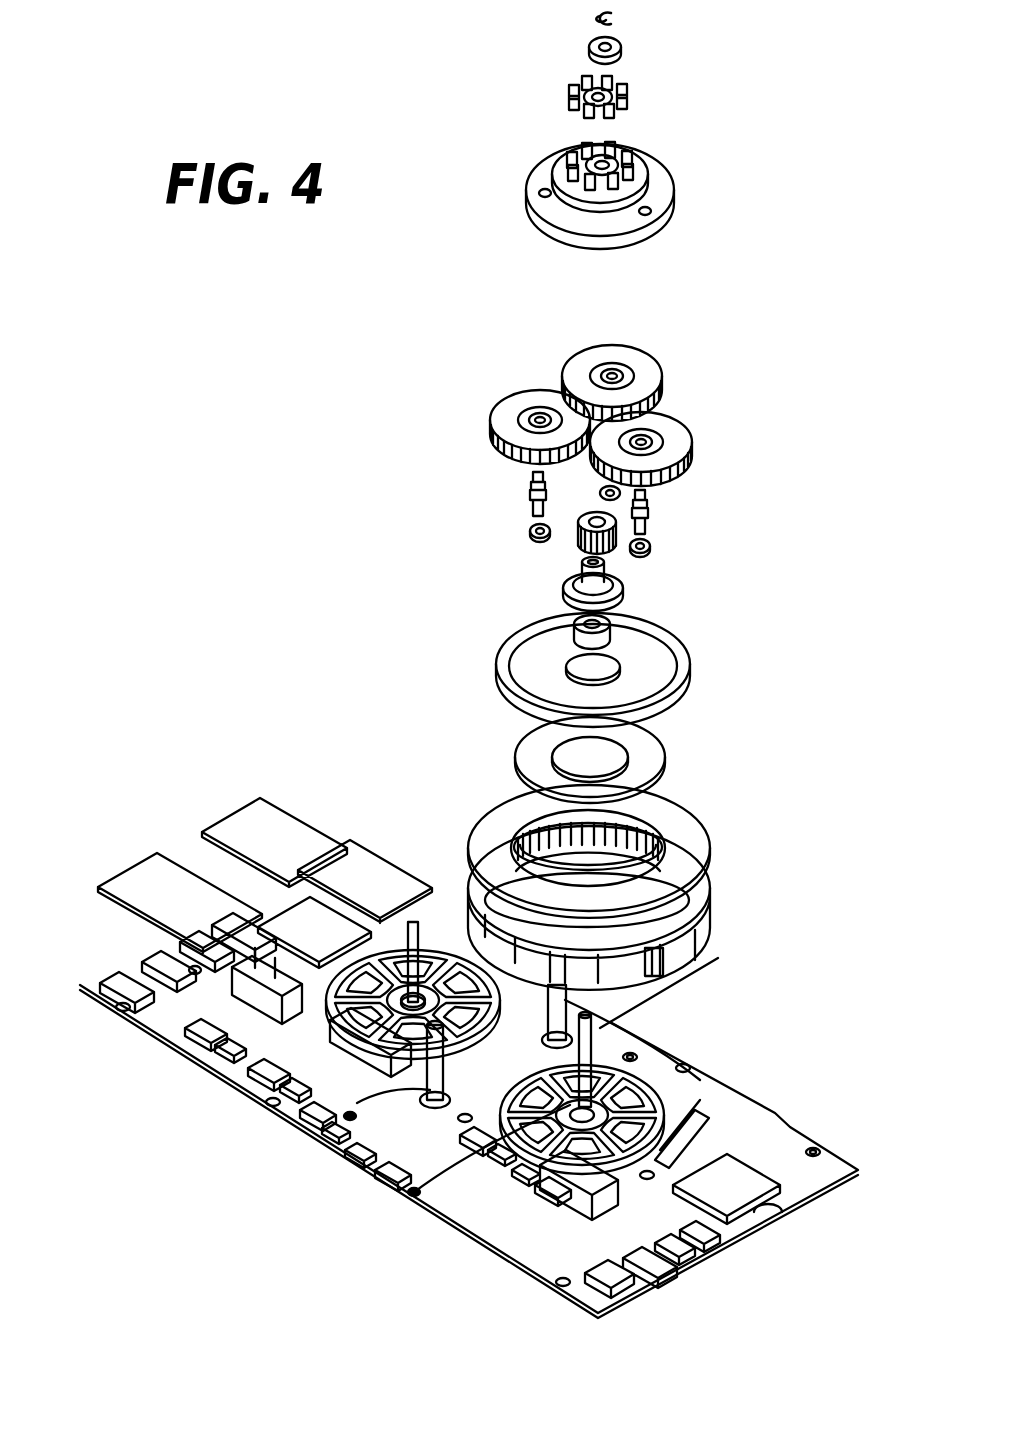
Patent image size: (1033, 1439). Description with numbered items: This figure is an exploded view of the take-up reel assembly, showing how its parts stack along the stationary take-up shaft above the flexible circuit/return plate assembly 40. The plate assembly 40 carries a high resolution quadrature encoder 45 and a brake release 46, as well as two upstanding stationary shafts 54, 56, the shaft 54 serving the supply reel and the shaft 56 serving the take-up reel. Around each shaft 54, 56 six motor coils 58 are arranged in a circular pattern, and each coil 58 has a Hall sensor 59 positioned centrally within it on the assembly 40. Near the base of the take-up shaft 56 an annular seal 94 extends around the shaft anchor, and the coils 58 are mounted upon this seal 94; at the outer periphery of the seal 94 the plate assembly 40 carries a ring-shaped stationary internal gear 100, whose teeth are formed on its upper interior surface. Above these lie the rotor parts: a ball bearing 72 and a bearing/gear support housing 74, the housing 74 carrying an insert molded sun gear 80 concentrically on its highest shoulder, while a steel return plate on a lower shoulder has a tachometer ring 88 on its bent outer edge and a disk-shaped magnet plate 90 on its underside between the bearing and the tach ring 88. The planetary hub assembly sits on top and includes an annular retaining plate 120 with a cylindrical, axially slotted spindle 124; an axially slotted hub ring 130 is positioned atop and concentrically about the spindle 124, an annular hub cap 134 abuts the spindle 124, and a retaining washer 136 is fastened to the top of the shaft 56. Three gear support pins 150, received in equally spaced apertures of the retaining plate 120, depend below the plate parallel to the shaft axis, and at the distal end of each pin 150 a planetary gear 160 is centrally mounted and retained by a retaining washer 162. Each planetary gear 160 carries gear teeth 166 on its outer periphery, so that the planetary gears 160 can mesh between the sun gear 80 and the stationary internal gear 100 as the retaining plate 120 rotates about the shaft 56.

The retaining washer 136 is at (595, 20).
The annular hub cap 134 is at (622, 50).
The hub ring 130 is at (632, 100).
The spindle 124 is at (630, 170).
The annular retaining plate 120 is at (680, 198).
The planetary gear 160 is at (698, 428).
The gear teeth 166 is at (500, 443).
The gear support pin 150 is at (528, 492).
The retaining washer 162 is at (535, 540).
The sun gear 80 is at (580, 532).
The bearing/gear support housing 74 is at (640, 590).
The ball bearing 72 is at (672, 662).
The tachometer ring 88 is at (500, 665).
The disk-shaped magnet plate 90 is at (665, 757).
The annular seal 94 is at (712, 840).
The stationary internal gear 100 is at (712, 905).
The upstanding stationary shaft 54 is at (430, 920).
The flexible circuit/return plate assembly 40 is at (148, 1020).
The high resolution quadrature encoder 45 is at (257, 993).
The brake release 46 is at (347, 1117).
The upstanding stationary shaft 56 is at (600, 1040).
The motor coil 58 is at (663, 1097).
The Hall sensor 59 is at (412, 1192).